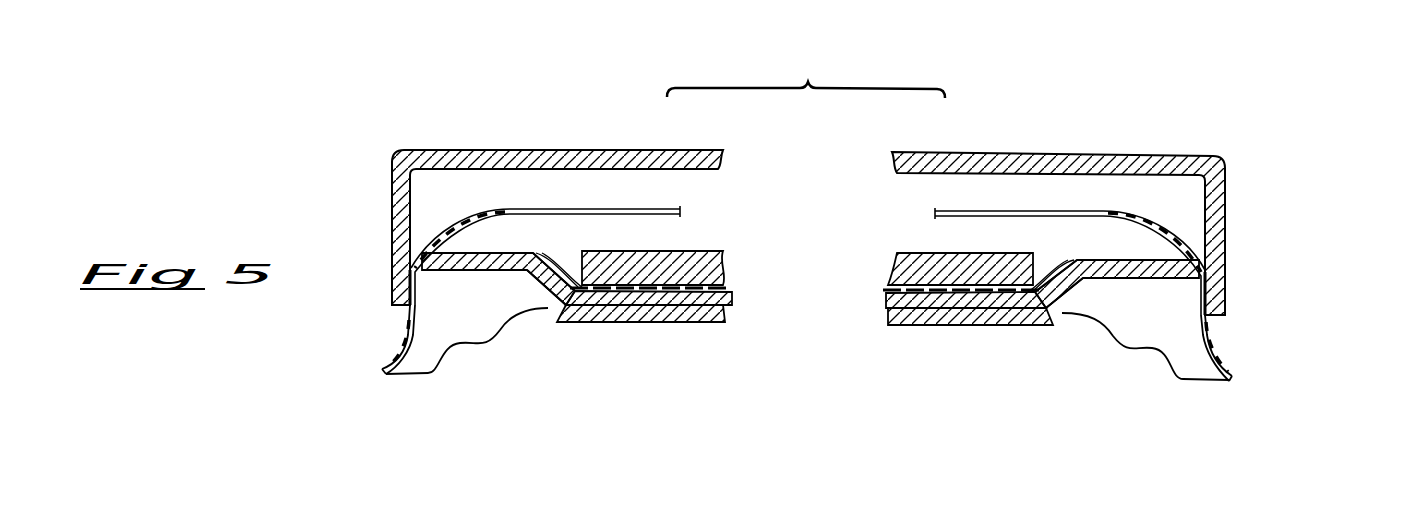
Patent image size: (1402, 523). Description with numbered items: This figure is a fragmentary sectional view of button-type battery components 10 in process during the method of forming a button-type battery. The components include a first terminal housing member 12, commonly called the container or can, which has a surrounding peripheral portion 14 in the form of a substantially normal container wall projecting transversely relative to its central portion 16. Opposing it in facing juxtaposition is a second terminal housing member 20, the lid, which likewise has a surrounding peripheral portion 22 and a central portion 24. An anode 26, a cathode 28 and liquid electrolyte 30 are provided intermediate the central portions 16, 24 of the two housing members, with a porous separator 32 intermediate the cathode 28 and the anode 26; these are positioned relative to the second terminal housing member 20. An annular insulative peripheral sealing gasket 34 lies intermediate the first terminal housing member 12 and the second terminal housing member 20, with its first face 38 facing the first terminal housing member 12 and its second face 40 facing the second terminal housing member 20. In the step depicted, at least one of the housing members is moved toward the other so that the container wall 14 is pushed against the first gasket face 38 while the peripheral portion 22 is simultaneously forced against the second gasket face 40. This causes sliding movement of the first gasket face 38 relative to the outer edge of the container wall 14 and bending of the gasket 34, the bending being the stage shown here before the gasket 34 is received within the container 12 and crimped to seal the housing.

The button-type battery components 10 is at (1282, 140).
The first terminal housing member 12 is at (408, 106).
The surrounding peripheral portion 14 is at (393, 263).
The central portion 16 is at (605, 150).
The second terminal housing member 20 is at (568, 355).
The surrounding peripheral portion 22 is at (495, 272).
The central portion 24 is at (650, 324).
The anode 26 is at (890, 297).
The cathode 28 is at (900, 258).
The liquid electrolyte 30 is at (548, 309).
The porous separator 32 is at (884, 289).
The peripheral sealing gasket 34 is at (385, 372).
The first face 38 is at (388, 364).
The second face 40 is at (488, 225).